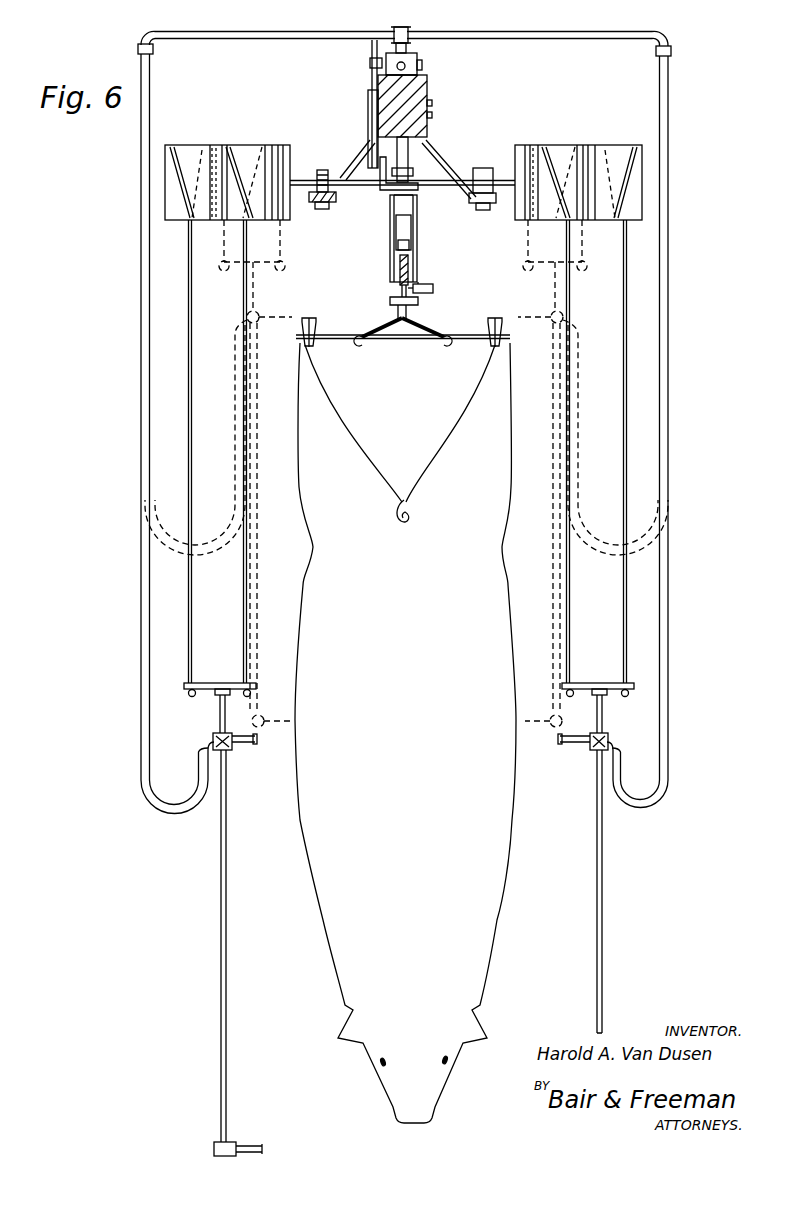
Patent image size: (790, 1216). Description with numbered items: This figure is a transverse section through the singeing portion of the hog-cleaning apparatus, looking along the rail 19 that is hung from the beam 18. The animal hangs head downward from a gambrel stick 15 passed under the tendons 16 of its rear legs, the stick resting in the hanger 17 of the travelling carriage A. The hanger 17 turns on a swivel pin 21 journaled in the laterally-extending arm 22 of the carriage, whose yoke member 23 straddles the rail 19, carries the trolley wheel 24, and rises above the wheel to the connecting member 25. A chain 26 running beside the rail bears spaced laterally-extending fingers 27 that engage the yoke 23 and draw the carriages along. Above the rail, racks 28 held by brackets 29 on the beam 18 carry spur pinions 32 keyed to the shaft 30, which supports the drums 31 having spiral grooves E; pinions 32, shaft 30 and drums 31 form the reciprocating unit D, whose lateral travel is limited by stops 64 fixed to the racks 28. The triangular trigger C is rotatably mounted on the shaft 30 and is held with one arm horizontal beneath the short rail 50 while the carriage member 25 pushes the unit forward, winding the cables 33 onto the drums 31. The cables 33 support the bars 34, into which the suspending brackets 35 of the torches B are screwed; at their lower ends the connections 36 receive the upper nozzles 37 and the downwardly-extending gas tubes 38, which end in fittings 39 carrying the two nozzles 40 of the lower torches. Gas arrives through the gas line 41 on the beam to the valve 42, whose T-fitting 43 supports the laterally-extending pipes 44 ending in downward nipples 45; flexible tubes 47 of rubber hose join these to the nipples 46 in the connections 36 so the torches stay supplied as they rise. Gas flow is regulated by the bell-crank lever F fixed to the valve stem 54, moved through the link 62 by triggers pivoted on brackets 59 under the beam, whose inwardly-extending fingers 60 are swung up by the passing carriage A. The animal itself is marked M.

The gambrel stick 15 is at (401, 340).
The tendons 16 is at (314, 326).
The hanger 17 is at (426, 333).
The beam 18 is at (428, 82).
The rail 19 is at (408, 266).
The swivel pin 21 is at (398, 319).
The laterally-extending arm 22 is at (390, 301).
The yoke member 23 is at (396, 262).
The trolley wheel 24 is at (398, 247).
The connecting member 25 is at (393, 216).
The chain 26 is at (432, 291).
The laterally-extending fingers 27 is at (422, 281).
The racks 28 is at (312, 204).
The brackets 29 is at (357, 155).
The shaft 30 is at (296, 150).
The drums 31 is at (240, 145).
The spur pinions 32 is at (321, 170).
The cables 33 is at (244, 592).
The bars 34 is at (184, 688).
The suspending brackets 35 is at (220, 708).
The connections 36 is at (215, 740).
The upper nozzles 37 is at (558, 739).
The gas tubes 38 is at (221, 861).
The fittings 39 is at (214, 1150).
The nozzles 40 is at (254, 1146).
The gas line 41 is at (425, 75).
The valve 42 is at (418, 61).
The T-fitting 43 is at (406, 33).
The laterally-extending pipes 44 is at (273, 38).
The nipples 45 is at (138, 48).
The nipples 46 is at (213, 744).
The flexible tubes 47 is at (141, 339).
The short rail 50 is at (409, 170).
The valve stem 54 is at (370, 64).
The brackets 59 is at (352, 178).
The inwardly-extending fingers 60 is at (386, 190).
The link 62 is at (368, 101).
The stops 64 is at (487, 168).
The travelling carriage A is at (417, 212).
The torches B is at (225, 765).
The trigger C is at (414, 171).
The reciprocating unit D is at (197, 145).
The spiral grooves E is at (178, 145).
The bell-crank lever F is at (372, 50).
The carcass M is at (405, 733).